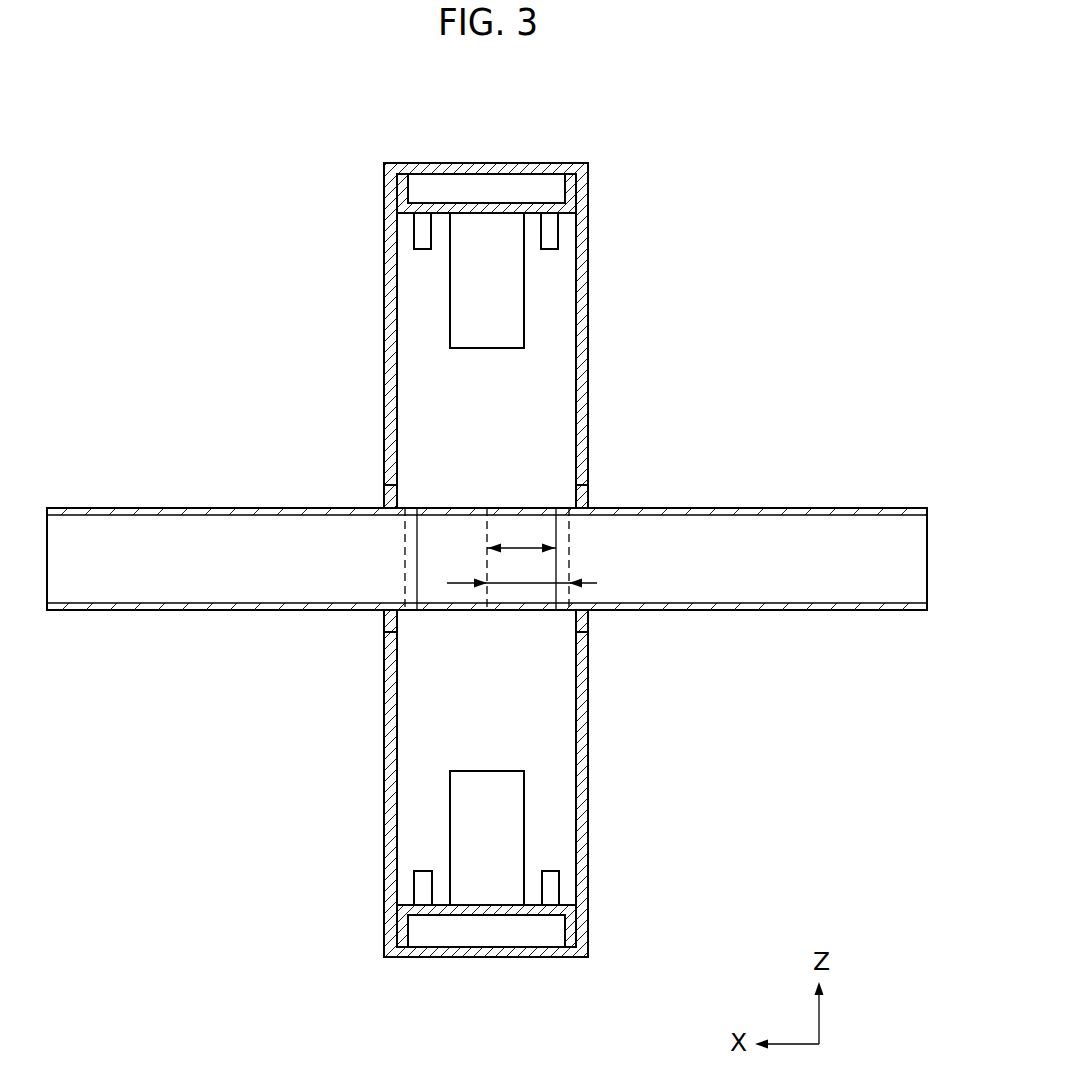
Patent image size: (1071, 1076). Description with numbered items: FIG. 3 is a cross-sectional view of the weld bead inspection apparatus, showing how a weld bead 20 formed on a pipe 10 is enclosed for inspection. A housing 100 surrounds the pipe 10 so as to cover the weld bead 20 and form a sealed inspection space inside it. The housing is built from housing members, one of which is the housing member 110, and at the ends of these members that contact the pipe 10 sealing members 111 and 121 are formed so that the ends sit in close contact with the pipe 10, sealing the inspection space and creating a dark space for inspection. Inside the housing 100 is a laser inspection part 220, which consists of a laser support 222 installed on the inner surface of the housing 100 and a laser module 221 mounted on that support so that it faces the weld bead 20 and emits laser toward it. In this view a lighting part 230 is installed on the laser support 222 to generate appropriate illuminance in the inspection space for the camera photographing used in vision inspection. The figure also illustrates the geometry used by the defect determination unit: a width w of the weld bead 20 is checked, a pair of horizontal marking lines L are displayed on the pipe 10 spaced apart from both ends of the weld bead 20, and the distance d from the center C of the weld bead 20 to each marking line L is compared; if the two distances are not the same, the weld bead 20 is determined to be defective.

The pipe 10 is at (820, 500).
The weld bead 20 is at (444, 563).
The housing 100 is at (471, 517).
The housing member 110 is at (388, 347).
The sealing member 111 is at (589, 498).
The sealing member 121 is at (587, 622).
The laser inspection part 220 is at (548, 560).
The laser module 221 is at (525, 910).
The laser support 222 is at (500, 820).
The lighting part 230 is at (410, 234).
The center of the weld bead C is at (487, 565).
The marking line L is at (568, 560).
The width of the weld bead w is at (521, 537).
The distance d is at (522, 571).